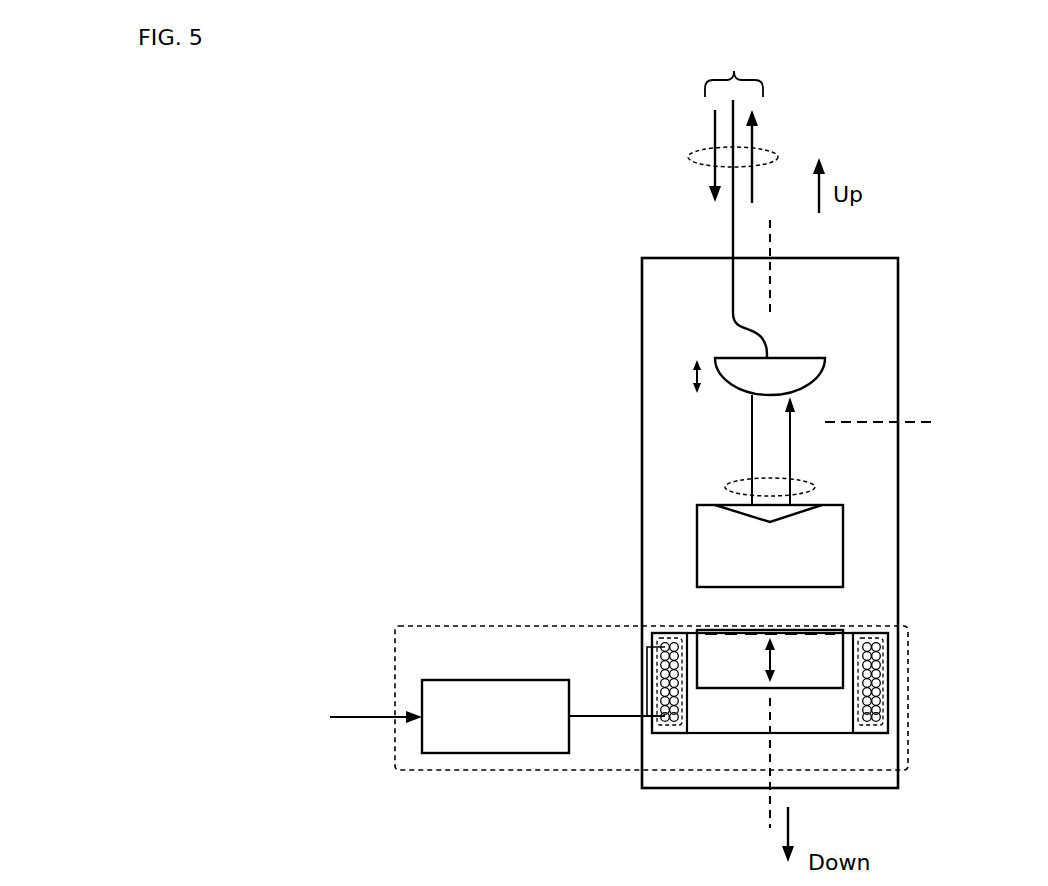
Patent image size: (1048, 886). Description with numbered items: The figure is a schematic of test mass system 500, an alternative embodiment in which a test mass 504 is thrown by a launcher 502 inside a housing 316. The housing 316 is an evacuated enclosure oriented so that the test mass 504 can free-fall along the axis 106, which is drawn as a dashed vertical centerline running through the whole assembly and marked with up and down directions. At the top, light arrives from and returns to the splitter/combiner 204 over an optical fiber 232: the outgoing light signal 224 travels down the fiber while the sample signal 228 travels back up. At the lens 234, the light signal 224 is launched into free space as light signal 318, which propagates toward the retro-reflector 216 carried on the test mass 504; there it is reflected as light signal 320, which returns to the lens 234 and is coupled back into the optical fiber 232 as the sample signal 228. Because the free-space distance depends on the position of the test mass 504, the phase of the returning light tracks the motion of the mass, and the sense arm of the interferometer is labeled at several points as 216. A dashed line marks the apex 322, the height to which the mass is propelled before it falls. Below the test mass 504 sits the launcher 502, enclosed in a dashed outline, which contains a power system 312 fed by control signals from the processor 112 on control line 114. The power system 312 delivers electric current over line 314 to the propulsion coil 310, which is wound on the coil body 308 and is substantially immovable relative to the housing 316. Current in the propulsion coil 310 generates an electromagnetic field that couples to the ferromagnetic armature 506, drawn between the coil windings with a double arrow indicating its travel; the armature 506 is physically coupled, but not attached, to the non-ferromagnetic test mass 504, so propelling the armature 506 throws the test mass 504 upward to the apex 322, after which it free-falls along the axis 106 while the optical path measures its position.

The test mass system 500 is at (440, 168).
The splitter/combiner 204 is at (632, 66).
The light signal 224 is at (692, 156).
The sample signal 228 is at (770, 156).
The optical fiber 232 is at (733, 222).
The retro-reflector 216 is at (727, 488).
The lens 234 is at (795, 358).
The light signal 318 is at (731, 450).
The light signal 320 is at (806, 451).
The apex 322 is at (917, 420).
The test mass 504 is at (848, 486).
The housing 316 is at (898, 532).
The control line 114 is at (365, 715).
The processor 112 is at (232, 714).
The power system 312 is at (495, 680).
The power line 314 is at (633, 715).
The armature 506 is at (770, 659).
The coil body 308 is at (770, 683).
The propulsion coil 310 is at (668, 725).
The launcher 502 is at (458, 770).
The axis 106 is at (768, 808).